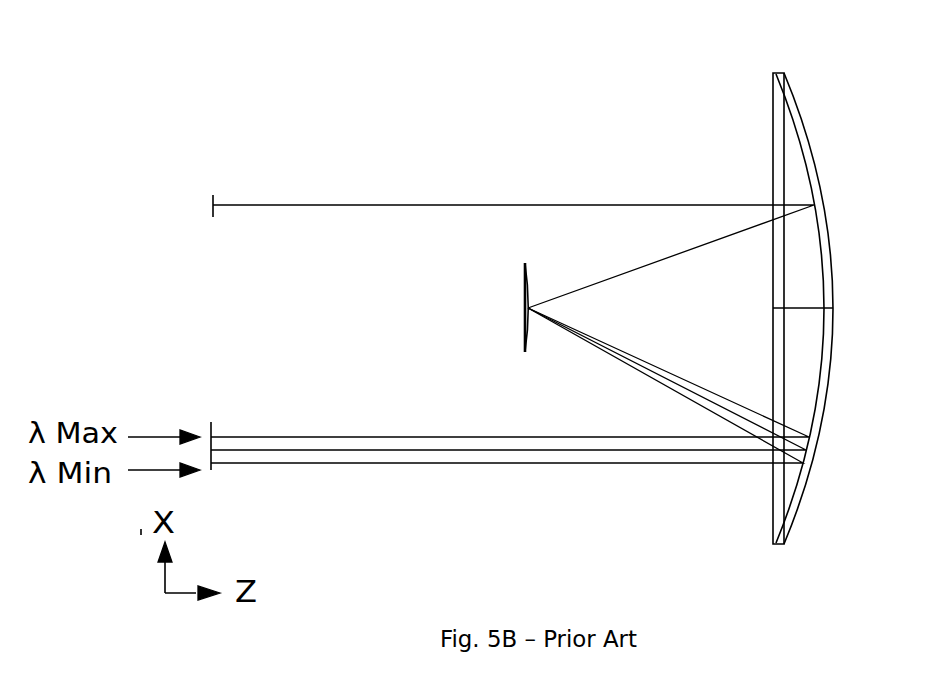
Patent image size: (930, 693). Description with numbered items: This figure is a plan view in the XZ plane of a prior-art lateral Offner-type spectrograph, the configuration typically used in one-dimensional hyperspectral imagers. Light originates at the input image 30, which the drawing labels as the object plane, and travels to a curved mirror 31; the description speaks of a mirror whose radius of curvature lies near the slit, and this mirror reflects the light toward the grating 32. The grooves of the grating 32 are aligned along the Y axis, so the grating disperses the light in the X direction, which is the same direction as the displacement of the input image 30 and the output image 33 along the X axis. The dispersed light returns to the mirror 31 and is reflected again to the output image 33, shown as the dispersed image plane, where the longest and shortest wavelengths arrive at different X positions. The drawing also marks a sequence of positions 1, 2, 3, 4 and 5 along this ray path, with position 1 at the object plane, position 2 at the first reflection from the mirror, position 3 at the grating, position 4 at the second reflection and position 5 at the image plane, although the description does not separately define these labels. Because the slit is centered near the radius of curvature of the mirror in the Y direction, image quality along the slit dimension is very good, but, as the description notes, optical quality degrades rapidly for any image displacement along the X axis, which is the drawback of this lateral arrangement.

The object point on object plane 1 is at (228, 227).
The reflection point on concave mirror 2 is at (541, 248).
The diffraction point on grating 3 is at (545, 302).
The second reflection point on concave mirror 4 is at (540, 389).
The image point on dispersed image plane 5 is at (227, 426).
The input image 30 is at (247, 188).
The concave mirror 31 is at (716, 295).
The grating 32 is at (467, 302).
The output image 33 is at (301, 472).